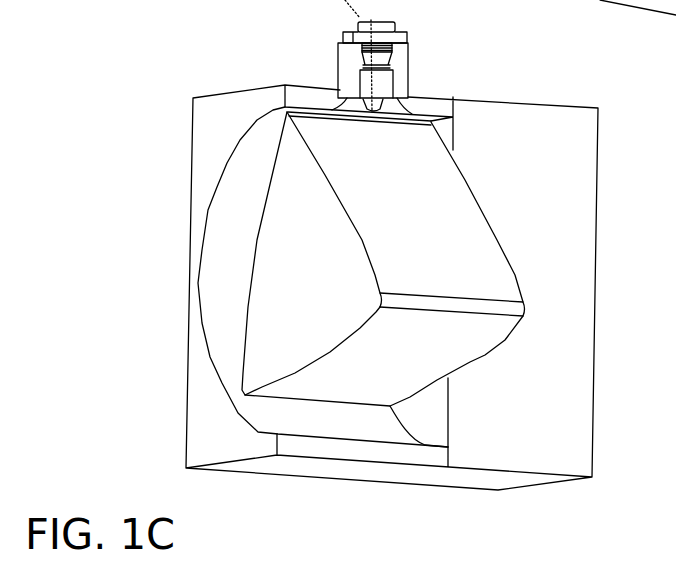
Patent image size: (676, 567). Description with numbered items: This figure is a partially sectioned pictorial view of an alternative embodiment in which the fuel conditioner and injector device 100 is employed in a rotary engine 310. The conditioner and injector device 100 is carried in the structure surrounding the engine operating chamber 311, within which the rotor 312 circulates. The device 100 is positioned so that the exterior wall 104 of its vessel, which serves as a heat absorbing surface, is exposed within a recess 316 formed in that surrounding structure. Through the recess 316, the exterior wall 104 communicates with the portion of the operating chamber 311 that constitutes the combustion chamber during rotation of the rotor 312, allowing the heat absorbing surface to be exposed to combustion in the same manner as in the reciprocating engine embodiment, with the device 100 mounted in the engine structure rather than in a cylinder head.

The rotary engine 310 is at (238, 36).
The engine operating chamber 311 is at (231, 246).
The rotor 312 is at (316, 264).
The fuel conditioner and injector device 100 is at (396, 24).
The recess 316 is at (405, 97).
The exterior wall 104 is at (390, 111).